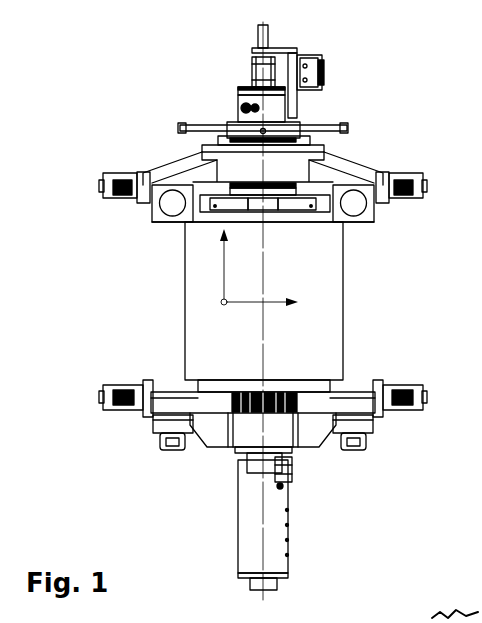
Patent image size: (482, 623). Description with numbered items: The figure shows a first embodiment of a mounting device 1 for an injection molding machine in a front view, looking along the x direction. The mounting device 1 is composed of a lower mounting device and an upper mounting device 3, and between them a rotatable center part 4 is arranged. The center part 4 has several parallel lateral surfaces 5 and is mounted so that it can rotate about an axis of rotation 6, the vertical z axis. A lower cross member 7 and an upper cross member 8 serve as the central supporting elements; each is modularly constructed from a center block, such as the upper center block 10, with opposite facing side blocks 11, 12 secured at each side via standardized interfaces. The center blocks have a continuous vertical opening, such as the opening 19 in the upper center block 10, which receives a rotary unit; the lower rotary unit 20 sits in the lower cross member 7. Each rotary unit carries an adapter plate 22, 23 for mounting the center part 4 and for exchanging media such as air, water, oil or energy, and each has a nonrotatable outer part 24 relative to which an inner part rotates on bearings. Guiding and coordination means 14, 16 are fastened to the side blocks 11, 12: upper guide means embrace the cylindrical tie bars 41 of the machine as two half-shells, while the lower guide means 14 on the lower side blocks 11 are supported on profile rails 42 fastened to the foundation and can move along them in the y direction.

The mounting device 1 is at (120, 67).
The upper mounting device 3 is at (203, 92).
The rotatable center part 4 is at (366, 252).
The lateral surfaces 5 is at (322, 302).
The axis of rotation 6 is at (260, 527).
The lower cross member 7 is at (314, 470).
The upper cross member 8 is at (160, 138).
The center block 10 is at (296, 162).
The side blocks 11 is at (180, 398).
The side blocks 12 is at (352, 168).
The lower guide means 14 is at (158, 430).
The guiding and coordination means 16 is at (408, 173).
The continuous opening 19 is at (215, 500).
The lower rotary unit 20 is at (329, 104).
The adapter plate 22 is at (303, 387).
The adapter plate 23 is at (232, 206).
The nonrotatable outer part 24 is at (277, 518).
The tie bars 41 is at (173, 203).
The profile rails 42 is at (172, 447).